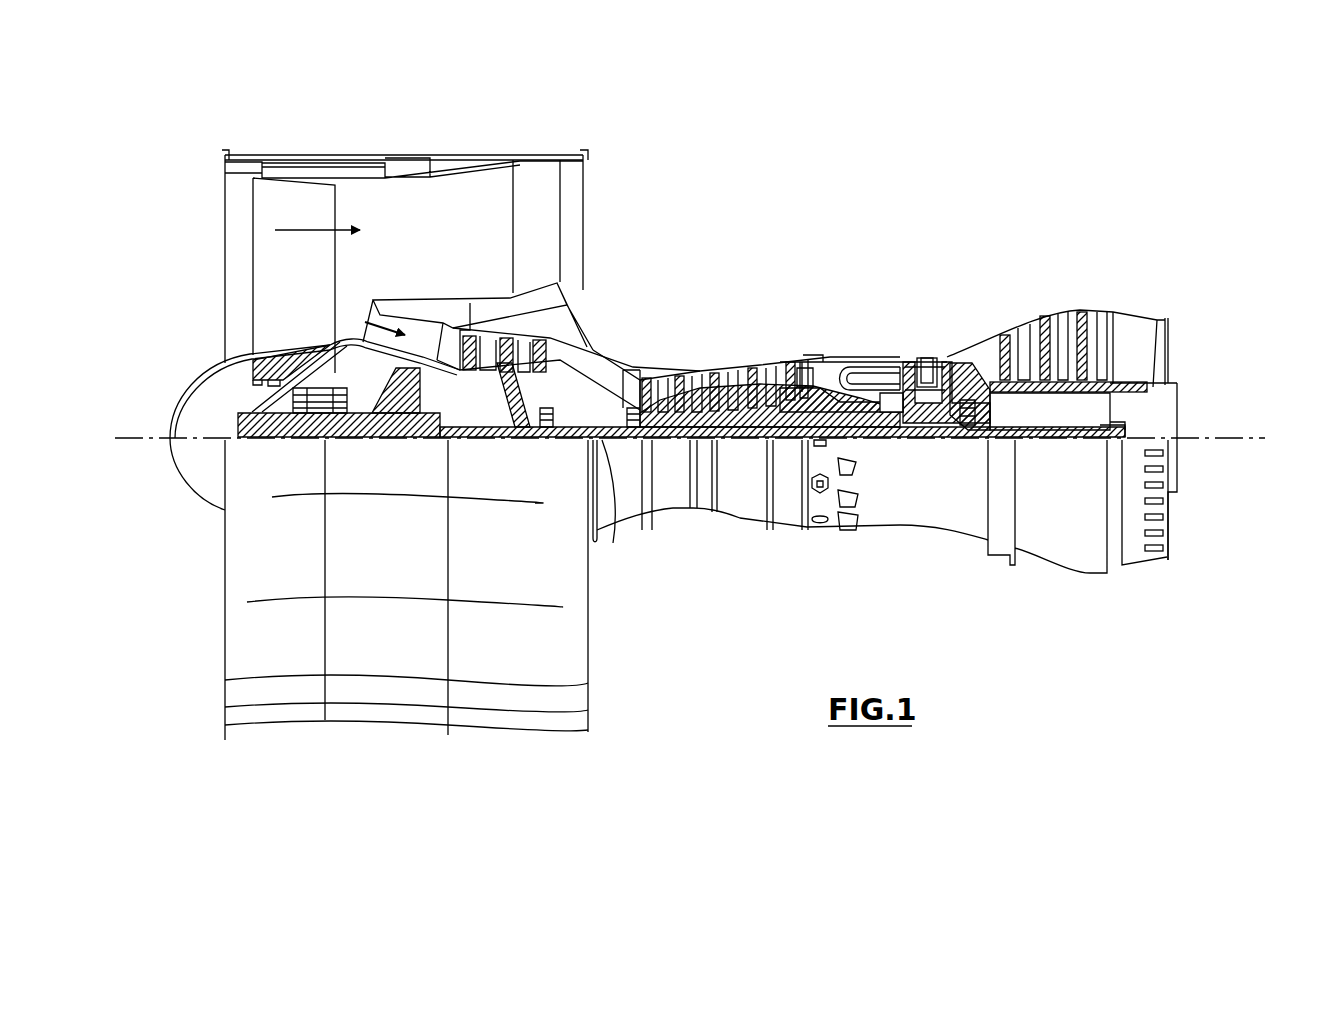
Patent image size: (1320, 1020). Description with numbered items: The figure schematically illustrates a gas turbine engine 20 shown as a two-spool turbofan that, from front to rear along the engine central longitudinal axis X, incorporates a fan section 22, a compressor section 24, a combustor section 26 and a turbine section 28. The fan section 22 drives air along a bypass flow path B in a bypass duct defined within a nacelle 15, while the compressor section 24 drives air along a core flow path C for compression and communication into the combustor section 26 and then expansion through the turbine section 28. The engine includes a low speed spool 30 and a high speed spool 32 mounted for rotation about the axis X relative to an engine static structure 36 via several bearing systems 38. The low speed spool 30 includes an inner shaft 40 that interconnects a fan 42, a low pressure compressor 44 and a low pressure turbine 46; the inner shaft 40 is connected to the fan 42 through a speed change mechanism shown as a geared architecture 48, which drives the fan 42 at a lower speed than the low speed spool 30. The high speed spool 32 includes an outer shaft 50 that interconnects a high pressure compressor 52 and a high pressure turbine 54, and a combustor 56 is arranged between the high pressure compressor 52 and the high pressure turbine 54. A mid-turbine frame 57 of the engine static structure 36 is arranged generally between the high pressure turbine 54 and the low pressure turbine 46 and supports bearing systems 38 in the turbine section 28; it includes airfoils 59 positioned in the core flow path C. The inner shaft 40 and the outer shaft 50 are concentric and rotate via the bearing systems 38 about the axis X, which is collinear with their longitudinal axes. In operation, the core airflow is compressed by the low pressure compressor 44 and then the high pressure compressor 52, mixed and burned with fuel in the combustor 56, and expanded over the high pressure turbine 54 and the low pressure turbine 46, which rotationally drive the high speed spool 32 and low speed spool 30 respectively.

The gas turbine engine 20 is at (868, 204).
The fan section 22 is at (336, 143).
The nacelle 15 is at (405, 158).
The compressor section 24 is at (746, 360).
The combustor section 26 is at (885, 349).
The turbine section 28 is at (1061, 398).
The low speed spool 30 is at (743, 450).
The high speed spool 32 is at (782, 407).
The engine static structure 36 is at (785, 538).
The bearing systems 38 is at (544, 427).
The inner shaft 40 is at (613, 533).
The fan 42 is at (308, 282).
The low pressure compressor 44 is at (510, 346).
The low pressure turbine 46 is at (1050, 330).
The geared architecture 48 is at (412, 440).
The outer shaft 50 is at (870, 440).
The high pressure compressor 52 is at (720, 410).
The high pressure turbine 54 is at (926, 358).
The combustor 56 is at (862, 380).
The mid-turbine frame 57 is at (972, 343).
The airfoils 59 is at (966, 374).
The bypass flow path B is at (318, 230).
The core flow path C is at (365, 322).
The engine central longitudinal axis X is at (1250, 438).